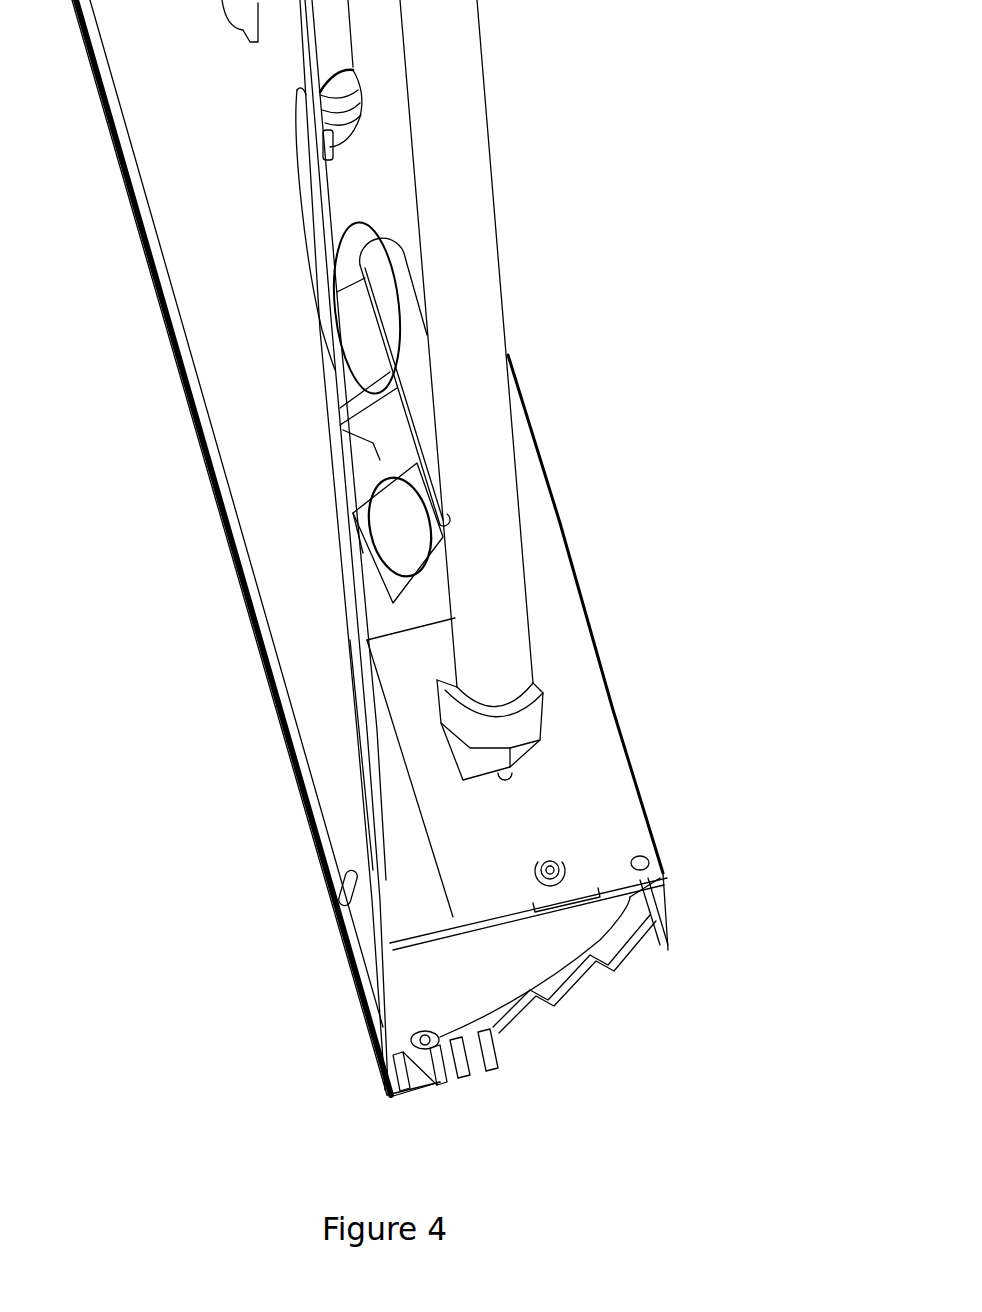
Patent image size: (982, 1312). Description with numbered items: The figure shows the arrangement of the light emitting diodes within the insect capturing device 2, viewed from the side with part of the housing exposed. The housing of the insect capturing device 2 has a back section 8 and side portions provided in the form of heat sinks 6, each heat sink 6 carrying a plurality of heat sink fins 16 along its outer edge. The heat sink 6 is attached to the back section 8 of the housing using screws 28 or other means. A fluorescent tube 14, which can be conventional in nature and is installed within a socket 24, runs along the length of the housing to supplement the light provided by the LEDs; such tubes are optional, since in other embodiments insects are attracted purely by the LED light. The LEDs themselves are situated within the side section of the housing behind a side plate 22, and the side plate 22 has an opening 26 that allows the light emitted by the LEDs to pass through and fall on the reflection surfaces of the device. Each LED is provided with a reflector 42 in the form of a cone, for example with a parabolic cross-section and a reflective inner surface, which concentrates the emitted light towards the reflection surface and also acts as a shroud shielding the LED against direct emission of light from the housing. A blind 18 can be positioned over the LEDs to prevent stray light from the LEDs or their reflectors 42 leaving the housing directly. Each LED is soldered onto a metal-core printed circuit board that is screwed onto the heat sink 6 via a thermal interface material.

The insect capturing device 2 is at (188, 712).
The heat sink 6 is at (671, 970).
The back section 8 is at (208, 275).
The fluorescent tube 14 is at (450, 198).
The heat sink fins 16 is at (573, 1003).
The blind 18 is at (410, 345).
The side plate 22 is at (549, 627).
The socket 24 is at (530, 737).
The opening 26 is at (418, 611).
The screws 28 is at (314, 892).
The reflector 42 is at (355, 333).